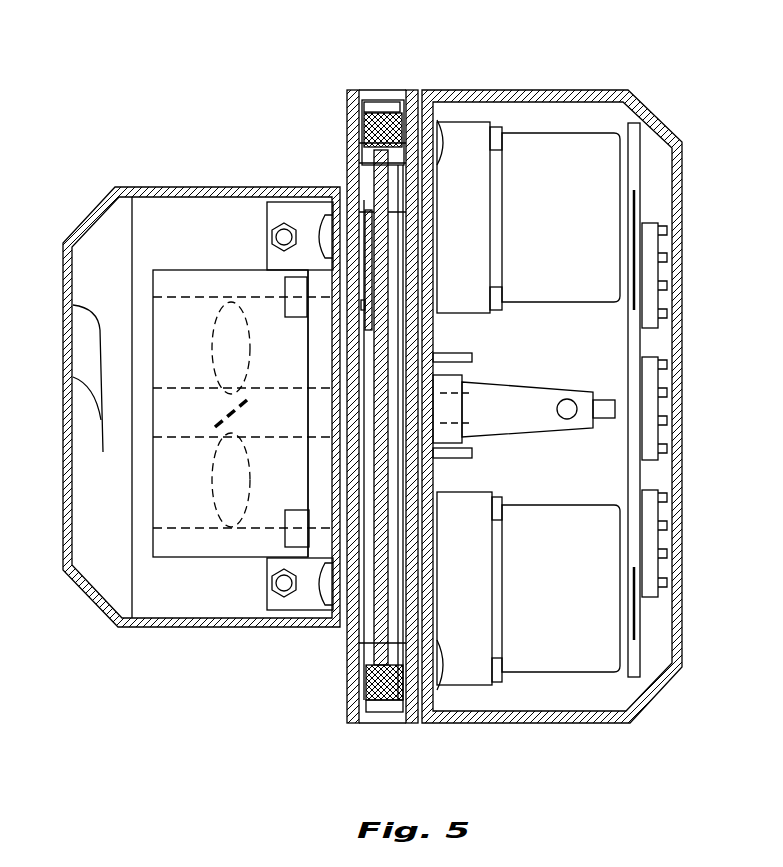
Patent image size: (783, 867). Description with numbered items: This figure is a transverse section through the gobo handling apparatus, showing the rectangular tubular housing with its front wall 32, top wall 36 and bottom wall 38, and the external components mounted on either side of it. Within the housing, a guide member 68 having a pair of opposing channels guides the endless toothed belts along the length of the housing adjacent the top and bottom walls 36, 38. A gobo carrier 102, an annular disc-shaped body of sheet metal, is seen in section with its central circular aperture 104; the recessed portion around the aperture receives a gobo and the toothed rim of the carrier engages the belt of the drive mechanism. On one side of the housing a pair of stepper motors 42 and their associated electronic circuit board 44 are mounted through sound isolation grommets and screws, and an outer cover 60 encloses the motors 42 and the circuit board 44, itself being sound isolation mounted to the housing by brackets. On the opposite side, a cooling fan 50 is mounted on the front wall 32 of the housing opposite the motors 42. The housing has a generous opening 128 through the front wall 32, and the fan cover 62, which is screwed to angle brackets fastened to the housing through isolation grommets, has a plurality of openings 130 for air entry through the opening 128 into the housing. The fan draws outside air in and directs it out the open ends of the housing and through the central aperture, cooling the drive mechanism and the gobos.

The front wall 32 is at (352, 642).
The top wall 36 is at (368, 90).
The bottom wall 38 is at (380, 724).
The stepper motors 42 is at (582, 137).
The electronic circuit board 44 is at (637, 308).
The cooling fan 50 is at (168, 270).
The outer cover 60 is at (498, 90).
The outer cover 62 is at (190, 188).
The guide member 68 is at (363, 680).
The gobo carrier 102 is at (372, 183).
The central circular aperture 104 is at (388, 184).
The opening 128 is at (345, 450).
The openings 130 is at (76, 432).